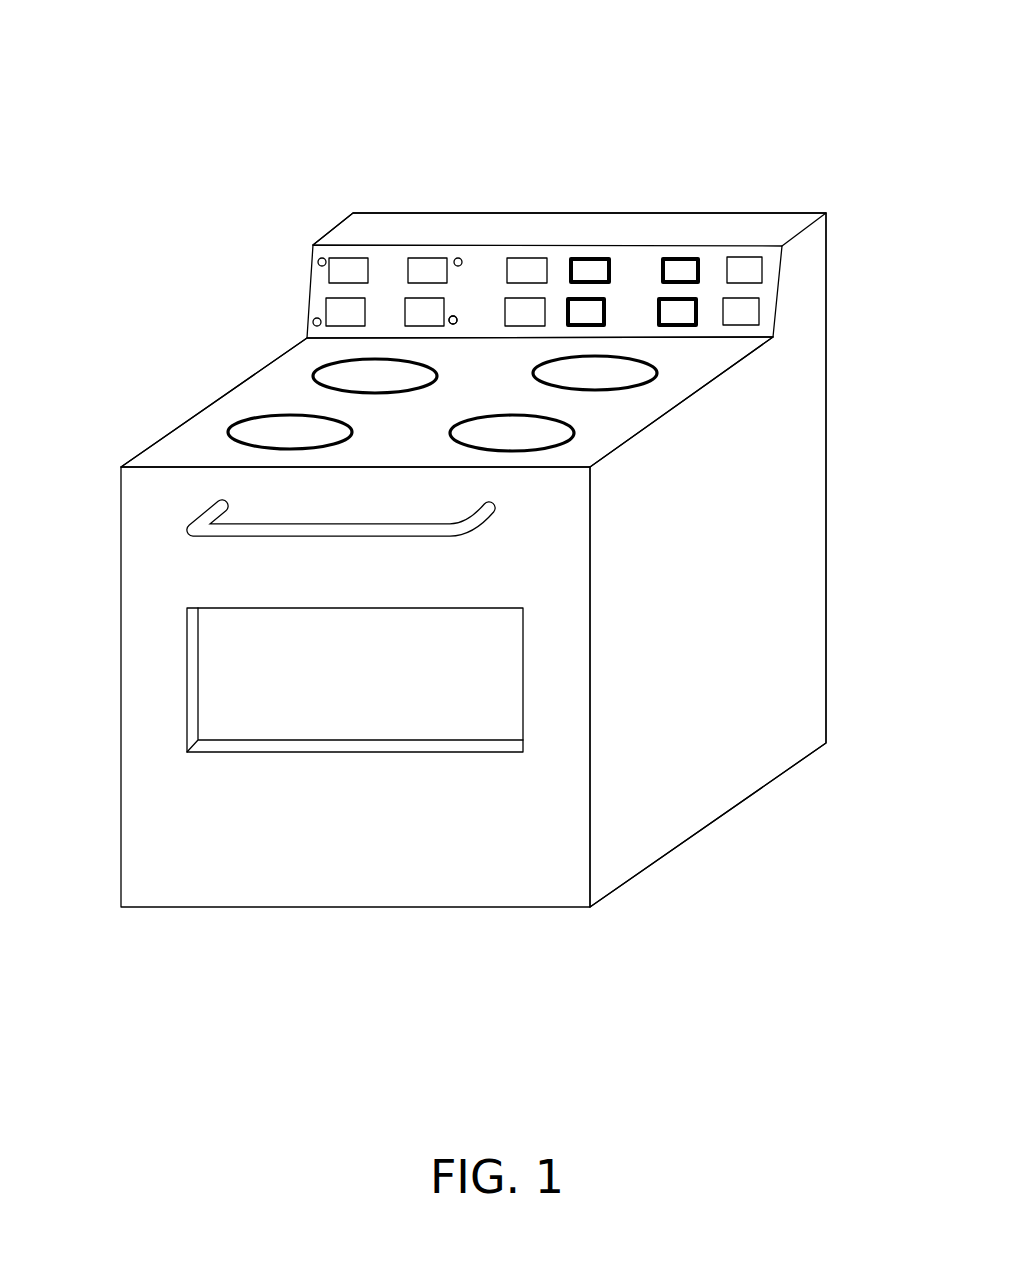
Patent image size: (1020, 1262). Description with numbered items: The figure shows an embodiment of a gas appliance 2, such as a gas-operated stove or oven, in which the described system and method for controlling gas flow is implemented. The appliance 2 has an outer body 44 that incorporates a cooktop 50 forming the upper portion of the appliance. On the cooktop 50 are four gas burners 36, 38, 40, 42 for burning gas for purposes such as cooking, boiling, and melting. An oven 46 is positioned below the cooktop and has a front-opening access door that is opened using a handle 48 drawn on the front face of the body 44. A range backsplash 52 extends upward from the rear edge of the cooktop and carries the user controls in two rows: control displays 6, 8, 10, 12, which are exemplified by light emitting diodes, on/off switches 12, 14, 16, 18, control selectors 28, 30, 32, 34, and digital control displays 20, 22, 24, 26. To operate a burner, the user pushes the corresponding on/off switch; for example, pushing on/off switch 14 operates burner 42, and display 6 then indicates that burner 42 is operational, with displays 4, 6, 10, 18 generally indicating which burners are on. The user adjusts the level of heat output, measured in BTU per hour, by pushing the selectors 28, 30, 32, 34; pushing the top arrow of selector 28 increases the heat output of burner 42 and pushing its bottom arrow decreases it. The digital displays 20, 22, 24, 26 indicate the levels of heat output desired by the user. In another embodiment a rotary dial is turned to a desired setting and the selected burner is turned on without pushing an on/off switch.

The gas appliance 2 is at (489, 49).
The display 4 is at (315, 330).
The control display 6 is at (318, 259).
The control display 8 is at (455, 258).
The control display 10 is at (459, 321).
The control display 12 is at (313, 320).
The on/off switch 14 is at (345, 257).
The on/off switch 16 is at (417, 257).
The on/off switch 18 is at (457, 316).
The control display 20 is at (506, 312).
The control display 22 is at (527, 257).
The control display 24 is at (757, 257).
The control display 26 is at (760, 312).
The control selector 28 is at (586, 257).
The control selector 30 is at (607, 310).
The control selector 32 is at (660, 317).
The control selector 34 is at (701, 267).
The gas burner 36 is at (658, 372).
The gas burner 38 is at (575, 434).
The gas burner 40 is at (229, 432).
The gas burner 42 is at (315, 377).
The outer body 44 is at (745, 767).
The oven 46 is at (312, 731).
The handle 48 is at (183, 531).
The cooktop 50 is at (650, 412).
The range backsplash 52 is at (708, 226).